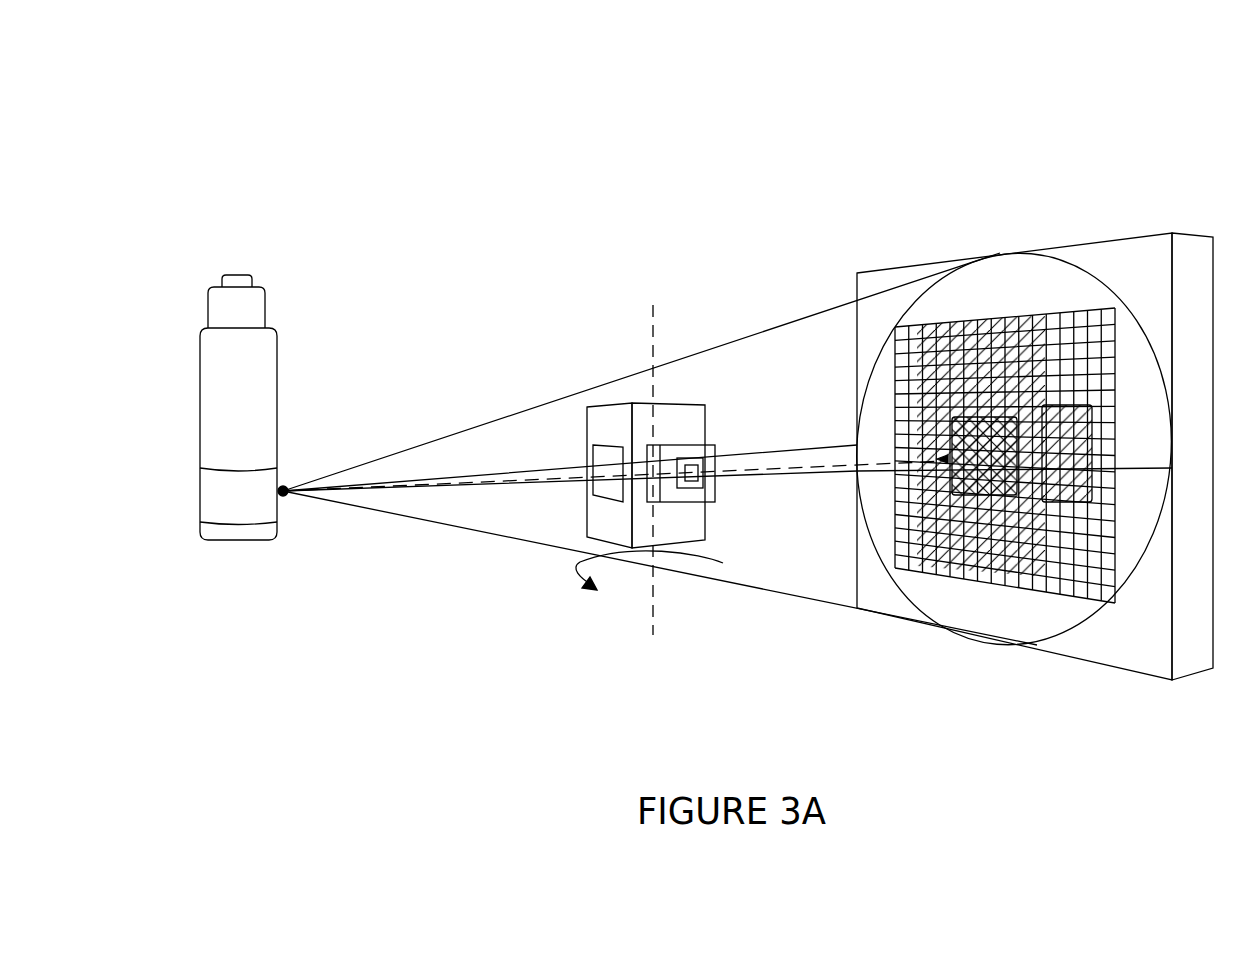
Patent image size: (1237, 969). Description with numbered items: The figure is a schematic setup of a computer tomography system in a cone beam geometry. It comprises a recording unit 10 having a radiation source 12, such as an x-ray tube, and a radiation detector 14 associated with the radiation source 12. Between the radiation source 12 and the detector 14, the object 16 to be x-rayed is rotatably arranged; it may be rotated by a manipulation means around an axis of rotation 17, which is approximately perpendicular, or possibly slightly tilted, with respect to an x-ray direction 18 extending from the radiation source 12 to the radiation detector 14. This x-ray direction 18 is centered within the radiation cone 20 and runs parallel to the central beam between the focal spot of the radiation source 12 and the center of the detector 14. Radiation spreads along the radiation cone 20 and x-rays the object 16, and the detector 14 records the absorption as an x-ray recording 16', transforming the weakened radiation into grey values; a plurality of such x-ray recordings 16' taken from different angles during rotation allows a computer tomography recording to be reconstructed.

The recording unit 10 is at (640, 185).
The radiation source 12 is at (266, 307).
The radiation detector 14 is at (853, 288).
The object 16 is at (616, 508).
The x-ray recording 16' is at (1004, 422).
The axis of rotation 17 is at (648, 608).
The x-ray direction 18 is at (788, 470).
The radiation cone 20 is at (423, 523).